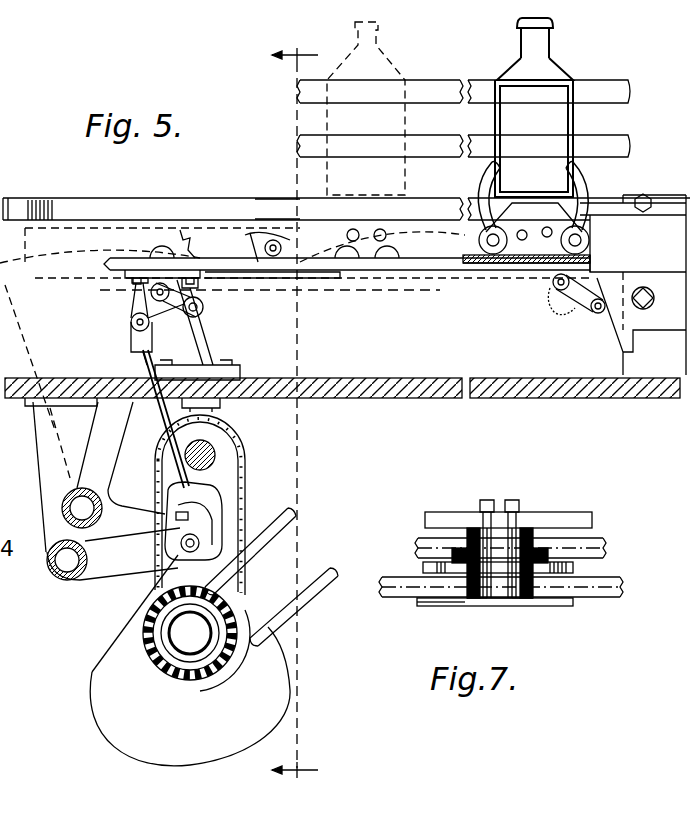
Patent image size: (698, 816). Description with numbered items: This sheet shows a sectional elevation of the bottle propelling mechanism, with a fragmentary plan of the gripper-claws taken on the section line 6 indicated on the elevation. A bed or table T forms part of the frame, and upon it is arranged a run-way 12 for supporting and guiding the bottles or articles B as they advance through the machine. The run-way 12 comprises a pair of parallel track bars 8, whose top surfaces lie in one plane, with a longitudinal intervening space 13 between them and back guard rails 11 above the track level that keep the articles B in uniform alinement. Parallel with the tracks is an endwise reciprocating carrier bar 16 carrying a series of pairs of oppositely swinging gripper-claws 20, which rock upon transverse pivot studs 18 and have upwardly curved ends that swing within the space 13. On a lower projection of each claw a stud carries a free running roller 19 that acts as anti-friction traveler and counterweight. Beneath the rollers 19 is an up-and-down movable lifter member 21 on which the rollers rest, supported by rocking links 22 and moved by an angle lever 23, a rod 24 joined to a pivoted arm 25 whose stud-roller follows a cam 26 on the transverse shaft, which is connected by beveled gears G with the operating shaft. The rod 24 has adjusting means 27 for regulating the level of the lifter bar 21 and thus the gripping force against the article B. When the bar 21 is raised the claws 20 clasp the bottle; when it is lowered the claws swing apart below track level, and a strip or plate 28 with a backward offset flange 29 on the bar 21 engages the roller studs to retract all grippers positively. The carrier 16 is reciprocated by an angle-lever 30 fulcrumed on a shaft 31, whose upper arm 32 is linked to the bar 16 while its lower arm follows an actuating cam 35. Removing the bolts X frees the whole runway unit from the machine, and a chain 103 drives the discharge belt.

In FIG. 5, the section line 6- 6 is at (295, 418).
In FIG. 5, the track bars 8 is at (258, 207).
In FIG. 7, the track bars 8 is at (595, 548).
In FIG. 5, the back guard rails 11 is at (475, 90).
In FIG. 5, the run-way 12 is at (346, 197).
In FIG. 5, the longitudinal intervening space 13 is at (33, 197).
In FIG. 7, the longitudinal intervening space 13 is at (600, 565).
In FIG. 5, the endwise reciprocating bar 16 is at (633, 285).
In FIG. 7, the endwise reciprocating bar 16 is at (425, 523).
In FIG. 5, the transverse pivot studs 18 is at (545, 240).
In FIG. 7, the transverse pivot studs 18 is at (505, 600).
In FIG. 5, the free running roller 19 is at (582, 233).
In FIG. 7, the free running roller 19 is at (470, 600).
In FIG. 5, the gripper-claws 20 is at (483, 187).
In FIG. 7, the gripper-claws 20 is at (467, 567).
In FIG. 5, the lifter member 21 is at (357, 310).
In FIG. 7, the lifter member 21 is at (402, 600).
In FIG. 5, the rocking links 22 is at (200, 298).
In FIG. 5, the angle lever 23 is at (165, 322).
In FIG. 5, the rod 24 is at (160, 425).
In FIG. 5, the pivoted arm 25 is at (125, 560).
In FIG. 5, the cam 26 is at (240, 620).
In FIG. 5, the means for adjustment 27 is at (215, 500).
In FIG. 7, the strip or plate 28 is at (555, 601).
In FIG. 7, the backward top offset or flange 29 is at (426, 604).
In FIG. 5, the angle-lever 30 is at (95, 465).
In FIG. 5, the shaft 31 is at (88, 508).
In FIG. 5, the upper arm 32 is at (148, 305).
In FIG. 5, the actuating cam 35 is at (151, 660).
In FIG. 5, the chain 103 is at (217, 452).
In FIG. 5, the bottles or articles B is at (534, 107).
In FIG. 5, the bed or table T is at (345, 384).
In FIG. 5, the bolts X is at (650, 298).
In FIG. 5, the beveled gears G is at (190, 641).